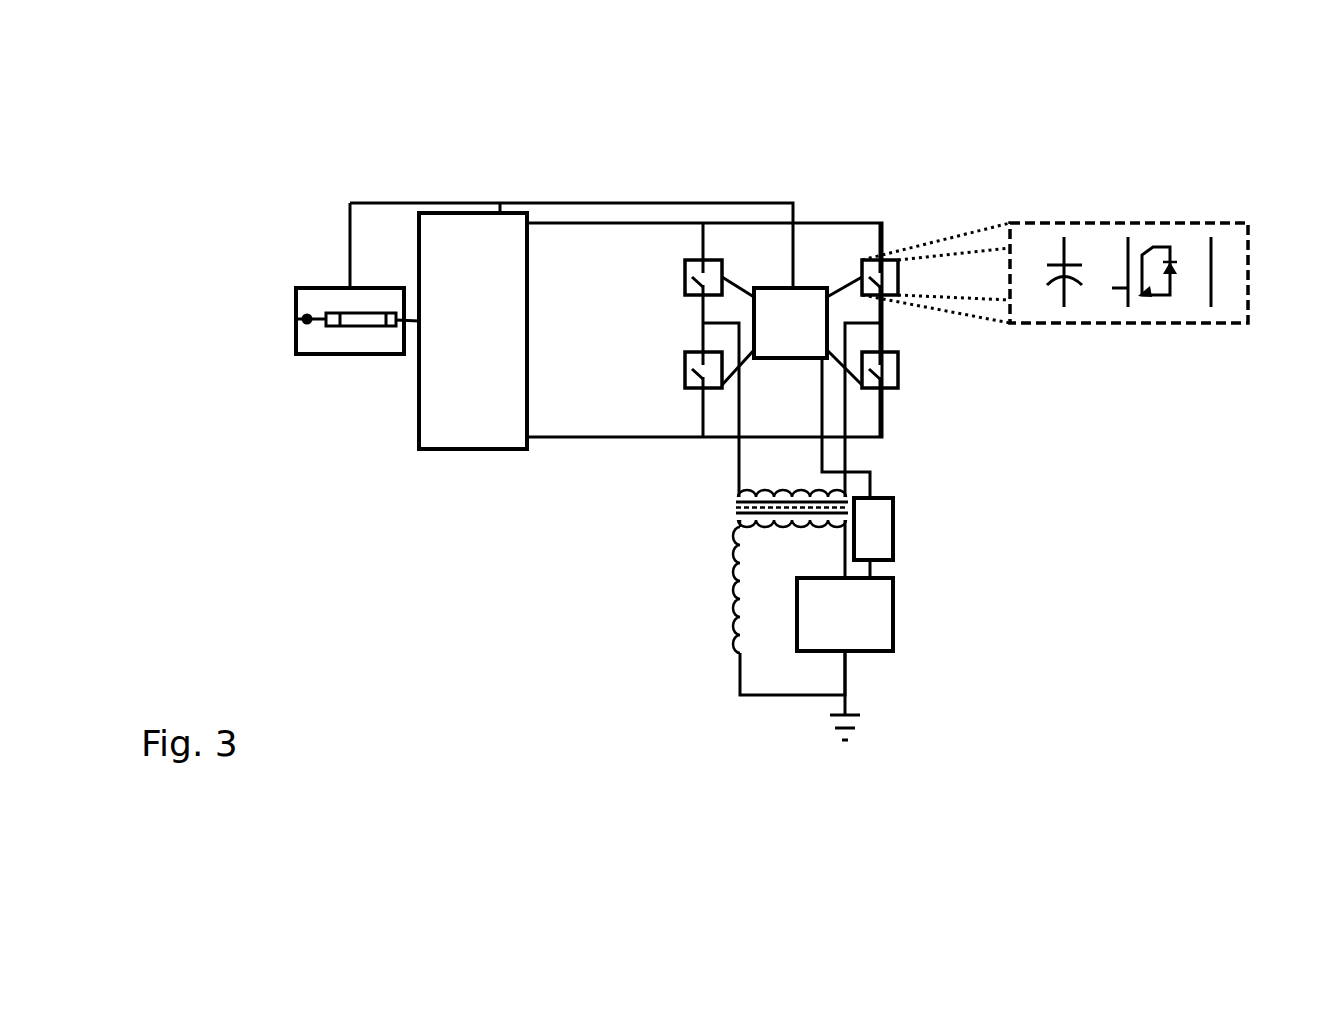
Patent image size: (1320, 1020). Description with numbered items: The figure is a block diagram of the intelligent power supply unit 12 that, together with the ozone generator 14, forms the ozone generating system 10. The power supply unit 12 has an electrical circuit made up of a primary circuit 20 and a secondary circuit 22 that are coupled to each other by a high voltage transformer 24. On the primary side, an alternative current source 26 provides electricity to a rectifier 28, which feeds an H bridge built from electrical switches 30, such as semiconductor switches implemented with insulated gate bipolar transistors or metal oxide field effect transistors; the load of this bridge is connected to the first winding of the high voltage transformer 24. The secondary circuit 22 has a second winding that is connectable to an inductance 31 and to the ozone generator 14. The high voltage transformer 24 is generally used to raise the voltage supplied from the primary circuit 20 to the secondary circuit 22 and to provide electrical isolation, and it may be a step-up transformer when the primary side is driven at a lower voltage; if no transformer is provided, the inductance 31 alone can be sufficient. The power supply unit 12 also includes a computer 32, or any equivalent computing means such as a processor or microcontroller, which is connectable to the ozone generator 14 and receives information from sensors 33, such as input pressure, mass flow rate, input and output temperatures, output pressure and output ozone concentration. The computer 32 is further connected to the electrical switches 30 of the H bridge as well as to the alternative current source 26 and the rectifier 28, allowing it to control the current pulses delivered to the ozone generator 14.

The ozone generating system 10 is at (1067, 605).
The power supply unit 12 is at (287, 528).
The ozone generator 14 is at (895, 587).
The primary circuit 20 is at (647, 223).
The secondary circuit 22 is at (737, 680).
The high voltage transformer 24 is at (712, 508).
The alternative current source 26 is at (296, 320).
The rectifier 28 is at (472, 213).
The electrical switches 30 is at (722, 262).
The inductance 31 is at (737, 565).
The computer 32 is at (812, 393).
The sensors 33 is at (895, 505).